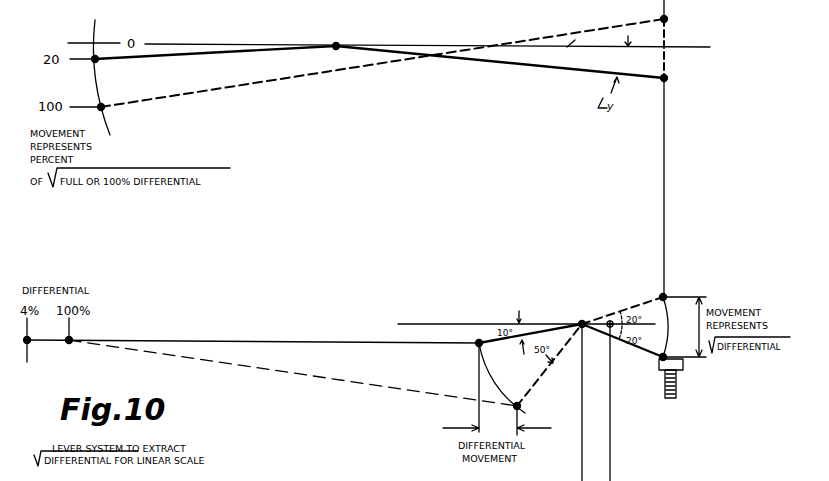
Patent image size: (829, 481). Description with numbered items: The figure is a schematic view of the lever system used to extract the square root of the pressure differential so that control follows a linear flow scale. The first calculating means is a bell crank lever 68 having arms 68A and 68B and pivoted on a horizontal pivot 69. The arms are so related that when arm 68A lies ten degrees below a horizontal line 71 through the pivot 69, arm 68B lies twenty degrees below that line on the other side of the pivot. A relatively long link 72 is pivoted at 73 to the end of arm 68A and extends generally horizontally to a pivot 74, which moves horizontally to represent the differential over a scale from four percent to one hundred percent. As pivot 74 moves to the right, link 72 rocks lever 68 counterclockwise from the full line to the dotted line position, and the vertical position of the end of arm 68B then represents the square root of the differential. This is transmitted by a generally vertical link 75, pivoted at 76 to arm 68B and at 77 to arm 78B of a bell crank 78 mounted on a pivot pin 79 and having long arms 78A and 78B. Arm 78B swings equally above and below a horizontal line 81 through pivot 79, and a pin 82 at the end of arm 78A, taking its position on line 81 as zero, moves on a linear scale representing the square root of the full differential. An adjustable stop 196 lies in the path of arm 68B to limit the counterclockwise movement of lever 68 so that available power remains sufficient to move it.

The bell crank lever 68 is at (565, 316).
The arm of bell crank lever 68A is at (548, 330).
The arm of bell crank lever 68B is at (642, 353).
The horizontal pivot 69 is at (581, 320).
The horizontal line 71 is at (438, 322).
The link 72 is at (323, 392).
The pivot 73 is at (476, 346).
The pivot 74 is at (30, 343).
The vertical link 75 is at (668, 62).
The pivot 76 is at (670, 292).
The pivot 77 is at (666, 80).
The bell crank 78 is at (455, 58).
The arm of bell crank 78A is at (176, 56).
The arm of bell crank 78B is at (528, 66).
The pivot pin 79 is at (340, 42).
The horizontal line 81 is at (580, 41).
The pin 82 is at (98, 63).
The adjustable stop 196 is at (678, 365).